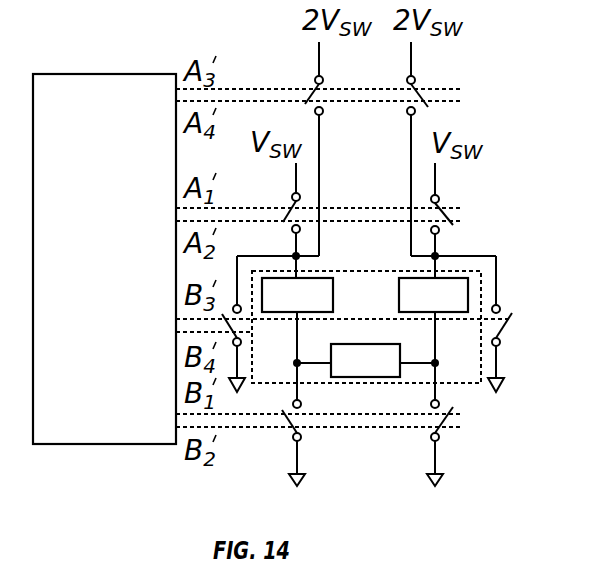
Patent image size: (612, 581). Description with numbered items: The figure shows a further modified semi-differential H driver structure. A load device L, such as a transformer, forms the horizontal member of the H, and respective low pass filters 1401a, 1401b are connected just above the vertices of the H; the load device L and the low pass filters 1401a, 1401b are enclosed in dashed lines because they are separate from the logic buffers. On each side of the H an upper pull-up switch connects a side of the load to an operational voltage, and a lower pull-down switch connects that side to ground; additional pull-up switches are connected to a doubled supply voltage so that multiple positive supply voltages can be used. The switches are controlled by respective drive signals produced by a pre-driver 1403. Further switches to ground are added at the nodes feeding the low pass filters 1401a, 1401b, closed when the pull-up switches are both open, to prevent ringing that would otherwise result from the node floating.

The pre-driver 1403 is at (100, 73).
The low pass filter 1401a is at (470, 293).
The low pass filter 1401b is at (313, 277).
The load device L is at (366, 379).